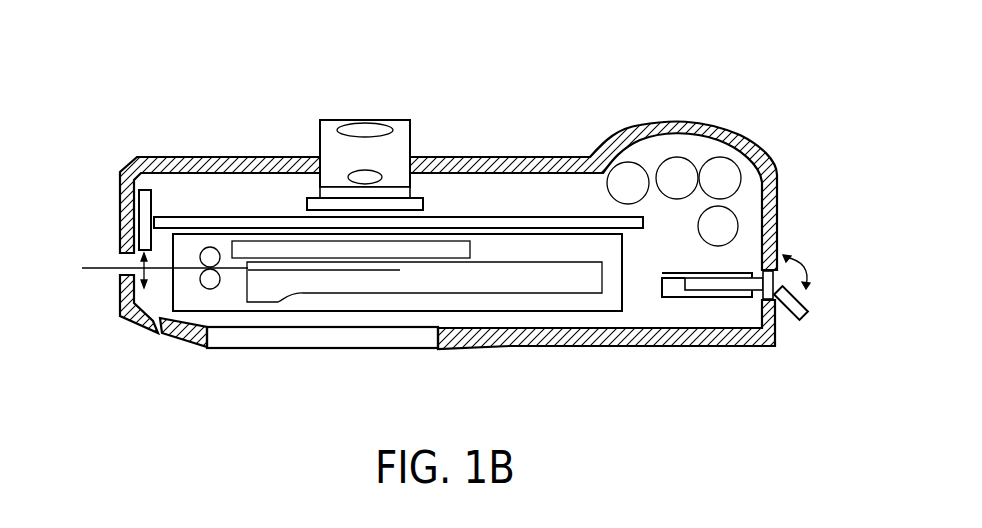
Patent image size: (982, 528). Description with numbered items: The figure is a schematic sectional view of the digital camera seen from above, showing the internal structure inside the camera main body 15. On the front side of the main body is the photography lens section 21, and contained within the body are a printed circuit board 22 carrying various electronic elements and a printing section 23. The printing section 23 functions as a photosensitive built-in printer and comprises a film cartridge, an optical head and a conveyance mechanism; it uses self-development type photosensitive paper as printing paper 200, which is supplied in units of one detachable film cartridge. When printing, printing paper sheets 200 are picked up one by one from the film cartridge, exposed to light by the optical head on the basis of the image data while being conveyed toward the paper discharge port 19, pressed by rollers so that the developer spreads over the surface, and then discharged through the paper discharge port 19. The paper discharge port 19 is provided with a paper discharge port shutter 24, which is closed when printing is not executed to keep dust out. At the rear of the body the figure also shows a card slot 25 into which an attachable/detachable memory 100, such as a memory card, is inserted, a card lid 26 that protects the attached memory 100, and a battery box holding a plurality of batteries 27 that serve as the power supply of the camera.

The housing / casing 15 is at (298, 342).
The paper discharge port 19 is at (115, 262).
The photography lens section 21 is at (410, 126).
The printed circuit board 22 is at (513, 216).
The printing section 23 is at (538, 306).
The paper discharge port shutter 24 is at (153, 195).
The card slot 25 is at (687, 298).
The card lid 26 is at (793, 313).
The batteries 27 is at (733, 168).
The attachable/detachable memory 100 is at (707, 280).
The printing paper 200 is at (90, 270).